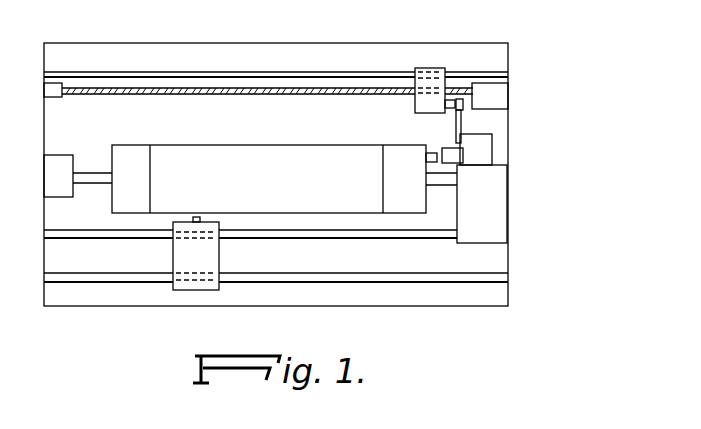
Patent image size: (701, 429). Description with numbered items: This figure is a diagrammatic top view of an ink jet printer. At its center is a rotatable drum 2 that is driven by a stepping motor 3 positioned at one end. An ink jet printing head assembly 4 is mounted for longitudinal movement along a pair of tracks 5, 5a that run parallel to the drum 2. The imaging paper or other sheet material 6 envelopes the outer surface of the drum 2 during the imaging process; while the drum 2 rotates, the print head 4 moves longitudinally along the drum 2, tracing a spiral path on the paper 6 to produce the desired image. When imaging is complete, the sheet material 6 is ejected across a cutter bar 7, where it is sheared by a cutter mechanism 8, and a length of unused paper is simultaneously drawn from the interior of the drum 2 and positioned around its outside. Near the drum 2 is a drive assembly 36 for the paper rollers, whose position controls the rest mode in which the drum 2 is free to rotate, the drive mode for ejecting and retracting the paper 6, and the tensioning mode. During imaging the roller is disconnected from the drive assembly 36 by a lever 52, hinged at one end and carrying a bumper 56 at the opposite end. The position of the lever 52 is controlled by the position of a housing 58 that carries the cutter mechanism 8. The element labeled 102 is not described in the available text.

The rotatable drum 2 is at (103, 152).
The stepping motor 3 is at (487, 215).
The ink jet printing head assembly 4 is at (212, 255).
The track 5 is at (112, 239).
The track 5a is at (105, 273).
The sheet material 6 is at (265, 147).
The cutter bar 7 is at (120, 72).
The cutter mechanism 8 is at (439, 59).
The drive assembly 36 is at (499, 147).
The lever 52 is at (462, 115).
The bumper 56 is at (451, 100).
The housing 58 is at (423, 102).
The toothed rack 102 is at (222, 90).